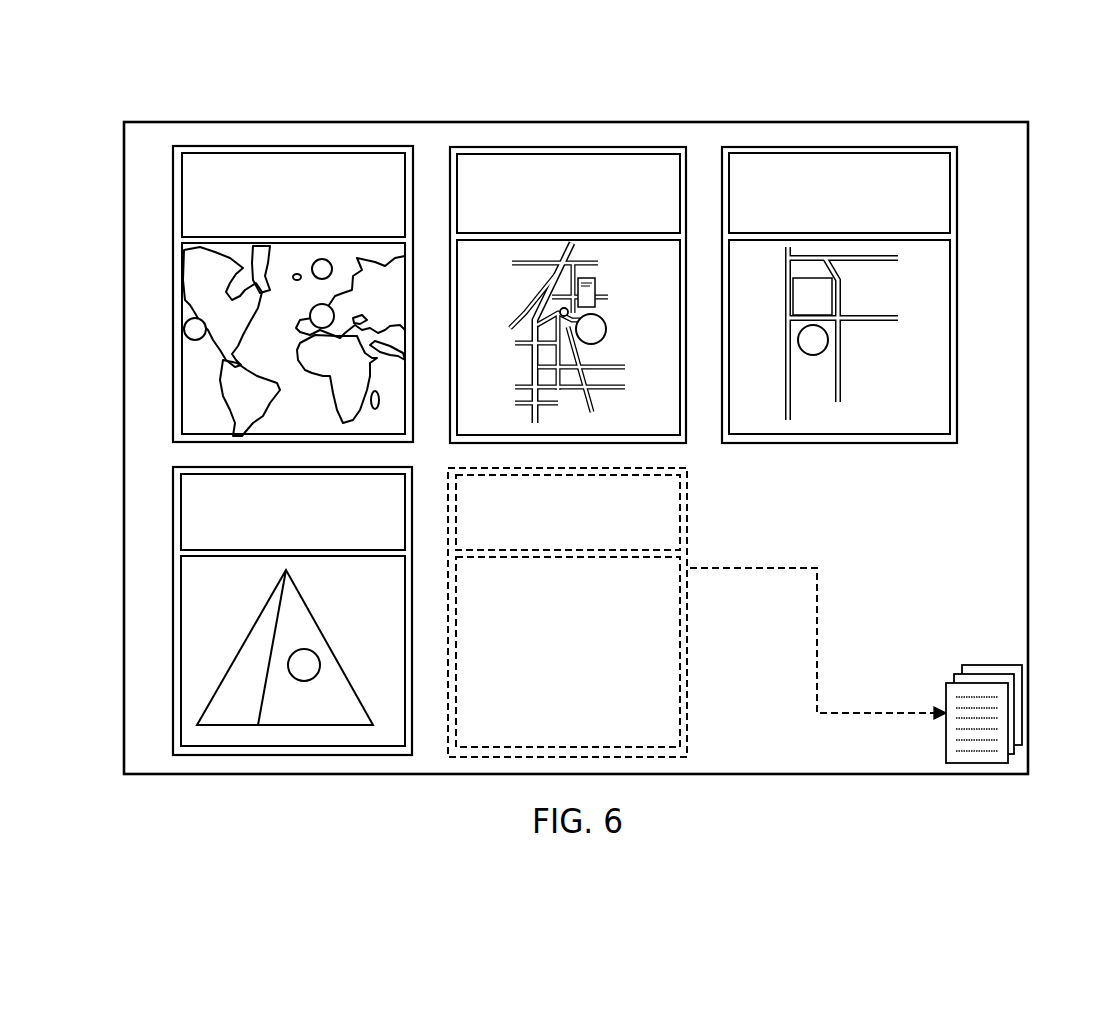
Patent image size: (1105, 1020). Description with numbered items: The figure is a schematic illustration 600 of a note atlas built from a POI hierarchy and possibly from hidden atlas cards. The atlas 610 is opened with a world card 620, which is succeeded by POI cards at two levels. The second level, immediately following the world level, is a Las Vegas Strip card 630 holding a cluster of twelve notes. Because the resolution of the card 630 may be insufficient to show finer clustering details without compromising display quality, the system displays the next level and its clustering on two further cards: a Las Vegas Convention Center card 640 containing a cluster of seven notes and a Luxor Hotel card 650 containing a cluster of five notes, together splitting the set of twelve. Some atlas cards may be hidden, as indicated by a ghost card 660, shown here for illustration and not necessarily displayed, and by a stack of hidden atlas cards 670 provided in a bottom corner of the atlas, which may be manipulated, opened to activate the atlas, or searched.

The schematic illustration 600 is at (578, 398).
The atlas 610 is at (138, 132).
The world card 620 is at (270, 135).
The Las Vegas Strip card 630 is at (653, 137).
The Las Vegas Convention Center card 640 is at (837, 137).
The Luxor Hotel card 650 is at (170, 488).
The ghost card 660 is at (685, 537).
The stack of hidden atlas cards 670 is at (1025, 708).